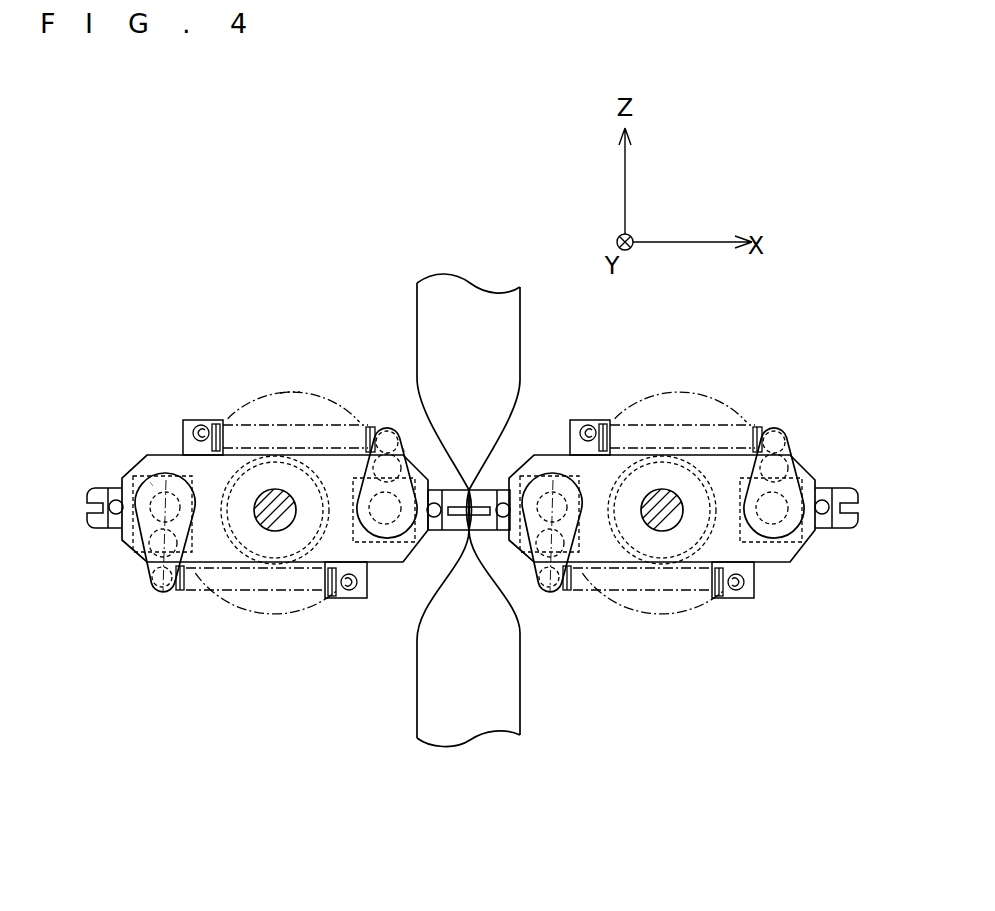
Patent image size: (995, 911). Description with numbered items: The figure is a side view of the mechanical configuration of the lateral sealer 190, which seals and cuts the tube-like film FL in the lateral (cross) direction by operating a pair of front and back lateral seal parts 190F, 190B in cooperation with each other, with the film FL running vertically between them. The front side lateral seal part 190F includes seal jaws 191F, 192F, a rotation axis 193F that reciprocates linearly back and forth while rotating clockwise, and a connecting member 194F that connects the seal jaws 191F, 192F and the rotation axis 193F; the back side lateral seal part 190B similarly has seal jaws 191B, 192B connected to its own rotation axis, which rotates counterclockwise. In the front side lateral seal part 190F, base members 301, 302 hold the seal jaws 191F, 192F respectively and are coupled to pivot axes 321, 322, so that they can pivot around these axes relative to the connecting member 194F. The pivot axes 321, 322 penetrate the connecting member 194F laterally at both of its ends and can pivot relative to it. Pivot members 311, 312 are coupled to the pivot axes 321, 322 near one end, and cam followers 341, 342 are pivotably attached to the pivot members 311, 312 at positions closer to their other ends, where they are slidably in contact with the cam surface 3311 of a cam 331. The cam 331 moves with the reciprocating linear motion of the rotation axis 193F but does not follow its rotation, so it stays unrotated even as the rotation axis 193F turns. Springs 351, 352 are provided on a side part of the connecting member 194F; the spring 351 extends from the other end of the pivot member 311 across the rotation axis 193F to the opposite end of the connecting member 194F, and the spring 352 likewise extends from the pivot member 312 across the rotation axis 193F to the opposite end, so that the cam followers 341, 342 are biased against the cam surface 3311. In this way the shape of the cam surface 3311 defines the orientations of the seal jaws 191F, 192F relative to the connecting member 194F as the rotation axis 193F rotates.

The lateral sealer 190 is at (320, 704).
The front side lateral seal part 190F is at (233, 404).
The back side lateral seal part 190B is at (733, 403).
The seal jaw 191F is at (452, 492).
The seal jaw 191B is at (488, 492).
The seal jaw 192F is at (97, 525).
The seal jaw 192B is at (843, 497).
The rotation axis 193F is at (247, 527).
The connecting member 194F is at (153, 458).
The base member 301 is at (396, 546).
The base member 302 is at (150, 482).
The pivot member 311 is at (368, 428).
The pivot member 312 is at (194, 568).
The pivot axis 321 is at (383, 517).
The pivot axis 322 is at (165, 505).
The cam 331 is at (303, 397).
The cam surface 3311 is at (283, 395).
The cam follower 341 is at (403, 448).
The cam follower 342 is at (143, 553).
The spring 351 is at (335, 435).
The spring 352 is at (293, 580).
The tube-like film FL is at (520, 347).